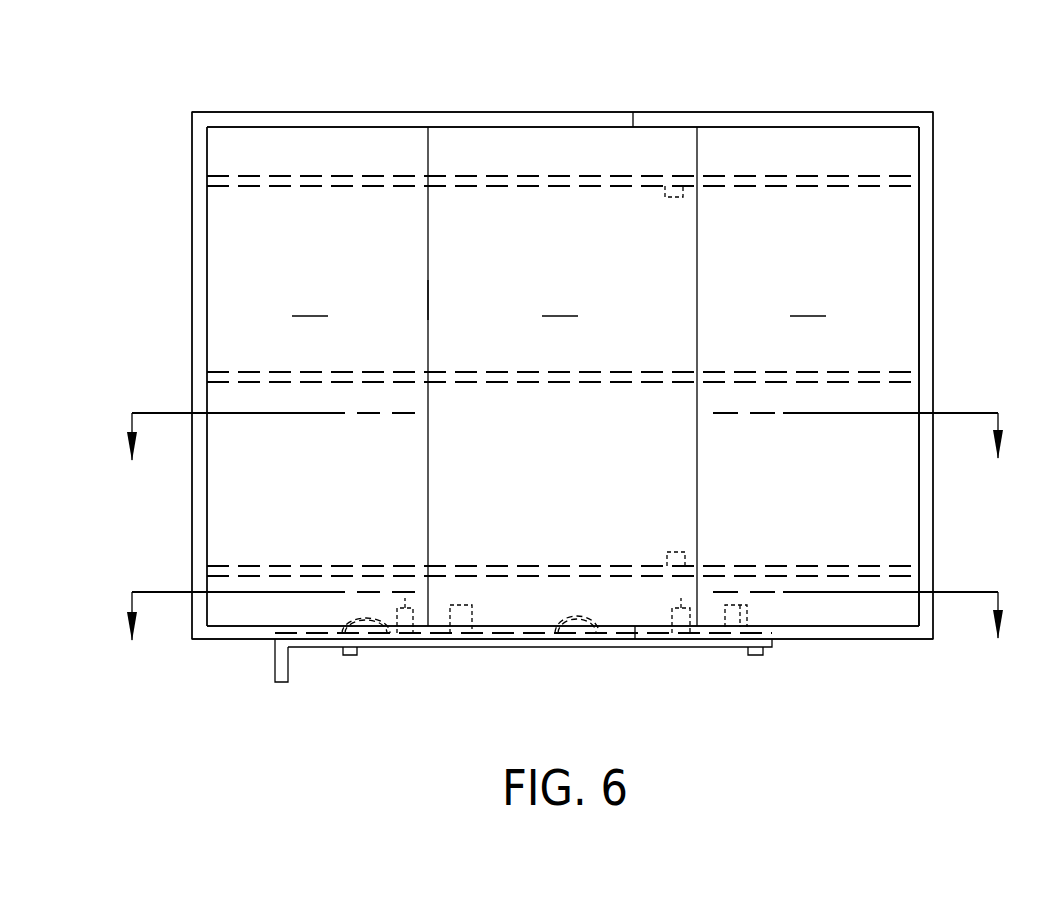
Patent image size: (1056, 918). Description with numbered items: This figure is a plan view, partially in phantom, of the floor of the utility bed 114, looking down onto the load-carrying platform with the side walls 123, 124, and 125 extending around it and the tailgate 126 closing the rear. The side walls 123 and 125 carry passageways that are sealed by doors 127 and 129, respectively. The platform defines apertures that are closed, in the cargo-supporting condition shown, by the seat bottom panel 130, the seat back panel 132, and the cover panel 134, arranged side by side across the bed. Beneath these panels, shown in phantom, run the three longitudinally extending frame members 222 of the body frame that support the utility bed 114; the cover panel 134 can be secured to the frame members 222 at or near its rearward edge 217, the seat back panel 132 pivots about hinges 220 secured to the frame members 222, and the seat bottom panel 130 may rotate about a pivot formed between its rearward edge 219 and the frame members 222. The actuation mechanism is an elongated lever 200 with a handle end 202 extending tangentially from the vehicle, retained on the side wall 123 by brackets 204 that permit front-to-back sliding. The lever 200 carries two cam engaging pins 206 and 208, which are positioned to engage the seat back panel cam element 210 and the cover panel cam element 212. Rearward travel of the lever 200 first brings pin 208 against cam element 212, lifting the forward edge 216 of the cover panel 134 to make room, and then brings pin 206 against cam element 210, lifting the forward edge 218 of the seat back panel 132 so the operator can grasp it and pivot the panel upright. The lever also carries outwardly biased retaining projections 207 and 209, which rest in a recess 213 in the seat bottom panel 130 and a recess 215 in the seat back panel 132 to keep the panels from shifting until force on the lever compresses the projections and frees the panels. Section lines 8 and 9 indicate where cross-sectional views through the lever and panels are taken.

The utility bed 114 is at (880, 302).
The side wall 123 is at (218, 641).
The side wall 124 is at (202, 494).
The side wall 125 is at (708, 120).
The tailgate 126 is at (925, 504).
The door 127 is at (238, 634).
The door 129 is at (492, 120).
The seat bottom panel 130 is at (310, 306).
The seat back panel 132 is at (560, 306).
The cover panel 134 is at (808, 306).
The elongated lever 200 is at (443, 647).
The handle end 202 is at (282, 672).
The bracket 204 is at (350, 655).
The cam engaging pin 206 is at (407, 600).
The retaining projection 207 is at (375, 634).
The cam engaging pin 208 is at (683, 608).
The retaining projection 209 is at (597, 630).
The seat back panel cam element 210 is at (472, 613).
The cover panel cam element 212 is at (750, 610).
The recess 213 is at (353, 618).
The recess 215 is at (573, 618).
The forward edge 216 is at (697, 225).
The rearward edge 217 is at (919, 250).
The forward edge 218 is at (428, 241).
The rearward edge 219 is at (428, 313).
The hinge 220 is at (670, 197).
The frame member 222 is at (241, 175).
The section line 8- 8 is at (564, 436).
The section line 9- 9 is at (564, 615).